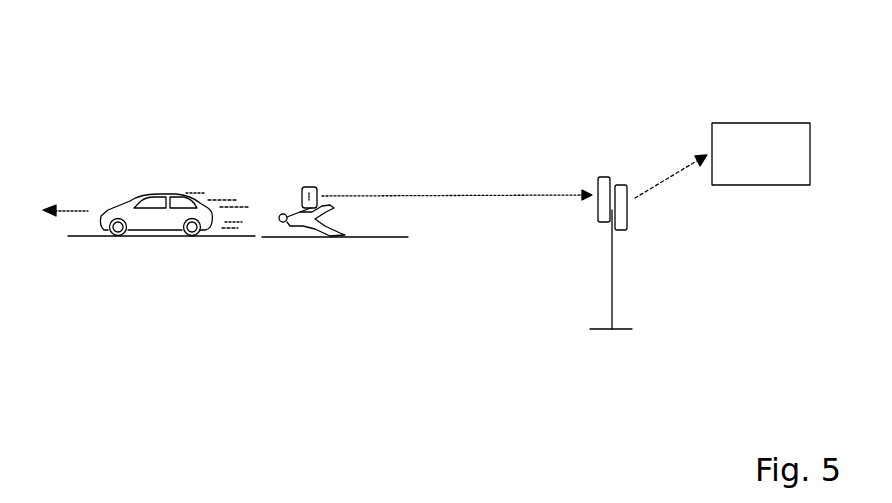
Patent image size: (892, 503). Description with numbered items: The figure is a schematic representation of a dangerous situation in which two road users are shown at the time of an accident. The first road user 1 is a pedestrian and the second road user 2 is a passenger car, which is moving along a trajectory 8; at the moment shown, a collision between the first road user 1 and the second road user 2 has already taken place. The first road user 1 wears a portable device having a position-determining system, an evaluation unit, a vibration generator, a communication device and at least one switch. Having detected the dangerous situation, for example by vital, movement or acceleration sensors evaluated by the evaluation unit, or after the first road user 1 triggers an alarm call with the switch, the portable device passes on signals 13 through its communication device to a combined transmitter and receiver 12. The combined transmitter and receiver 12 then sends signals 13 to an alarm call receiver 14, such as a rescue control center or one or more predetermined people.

The first road user 1 is at (328, 197).
The second road user 2 is at (158, 192).
The trajectory 8 is at (72, 210).
The combined transmitter and receiver 12 is at (612, 270).
The signals 13 is at (453, 197).
The alarm call receiver 14 is at (750, 186).